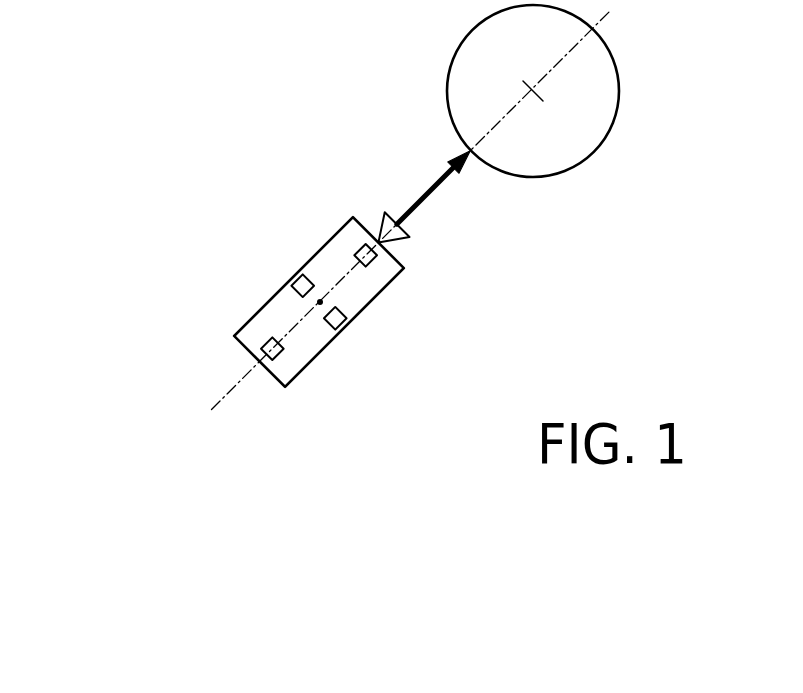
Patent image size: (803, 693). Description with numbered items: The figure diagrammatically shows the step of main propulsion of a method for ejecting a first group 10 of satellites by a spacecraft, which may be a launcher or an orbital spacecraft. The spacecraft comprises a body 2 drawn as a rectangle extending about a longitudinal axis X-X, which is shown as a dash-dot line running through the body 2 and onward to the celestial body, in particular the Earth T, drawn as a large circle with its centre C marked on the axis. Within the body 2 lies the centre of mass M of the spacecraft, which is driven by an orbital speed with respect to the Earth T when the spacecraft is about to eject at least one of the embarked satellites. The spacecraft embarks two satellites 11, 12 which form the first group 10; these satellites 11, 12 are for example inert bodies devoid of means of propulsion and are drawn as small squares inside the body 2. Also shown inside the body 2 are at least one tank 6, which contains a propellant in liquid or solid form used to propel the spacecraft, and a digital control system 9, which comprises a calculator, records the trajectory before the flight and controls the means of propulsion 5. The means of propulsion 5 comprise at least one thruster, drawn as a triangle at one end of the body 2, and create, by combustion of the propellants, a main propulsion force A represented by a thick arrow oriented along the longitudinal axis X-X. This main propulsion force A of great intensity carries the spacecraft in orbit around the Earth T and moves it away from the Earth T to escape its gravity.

The body 2 is at (263, 322).
The means of propulsion 5 is at (384, 215).
The tank 6 is at (377, 262).
The digital control system 9 is at (283, 351).
The first group of satellites 10 is at (120, 161).
The satellite 11 is at (295, 280).
The satellite 12 is at (310, 317).
The centre of mass M is at (322, 301).
The main propulsion force A is at (433, 187).
The center of target C is at (530, 92).
The Earth T is at (600, 78).
The longitudinal axis X-X is at (187, 435).